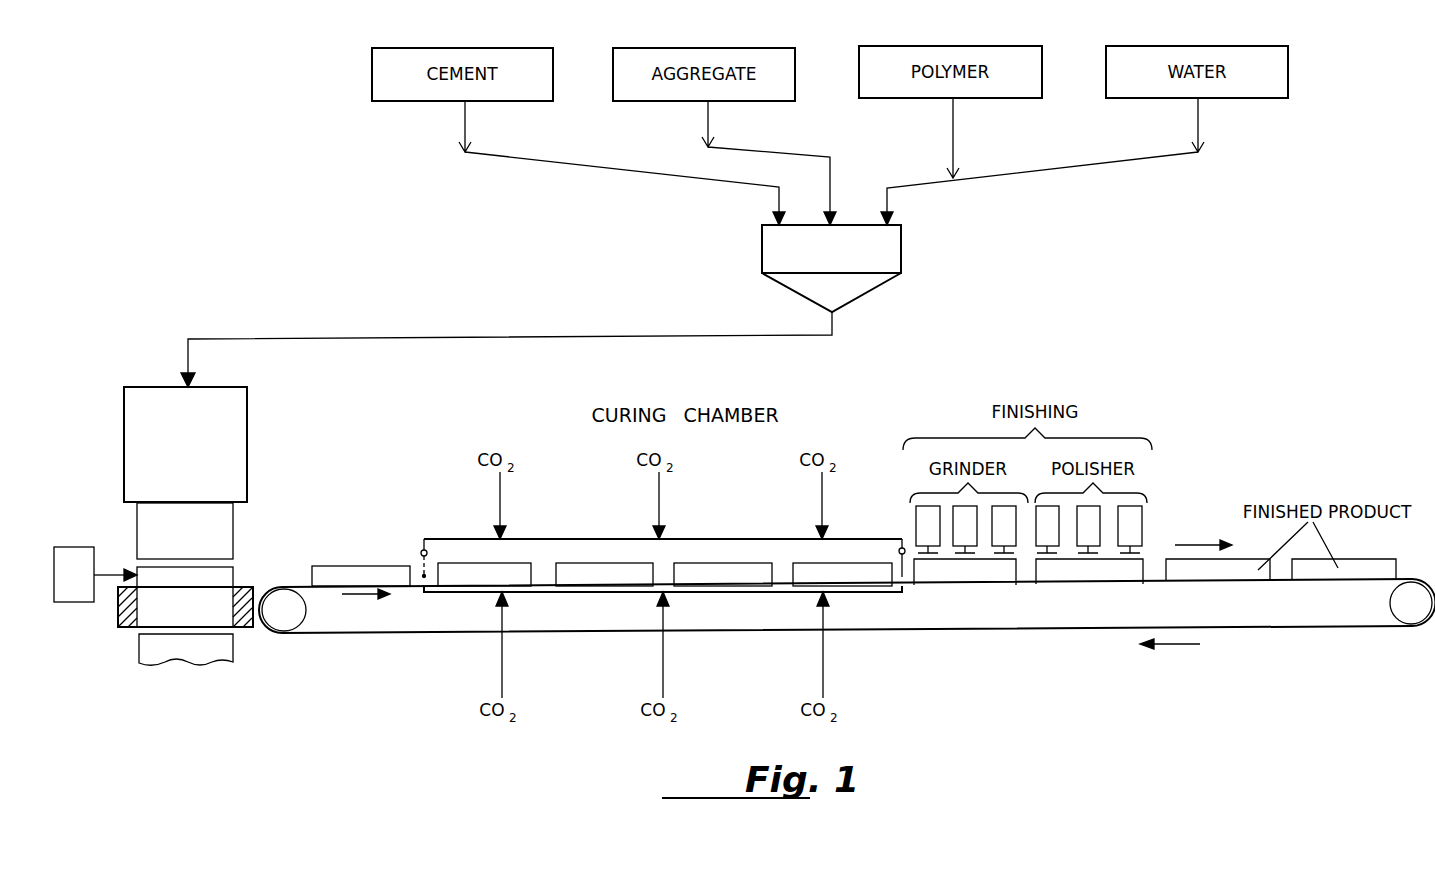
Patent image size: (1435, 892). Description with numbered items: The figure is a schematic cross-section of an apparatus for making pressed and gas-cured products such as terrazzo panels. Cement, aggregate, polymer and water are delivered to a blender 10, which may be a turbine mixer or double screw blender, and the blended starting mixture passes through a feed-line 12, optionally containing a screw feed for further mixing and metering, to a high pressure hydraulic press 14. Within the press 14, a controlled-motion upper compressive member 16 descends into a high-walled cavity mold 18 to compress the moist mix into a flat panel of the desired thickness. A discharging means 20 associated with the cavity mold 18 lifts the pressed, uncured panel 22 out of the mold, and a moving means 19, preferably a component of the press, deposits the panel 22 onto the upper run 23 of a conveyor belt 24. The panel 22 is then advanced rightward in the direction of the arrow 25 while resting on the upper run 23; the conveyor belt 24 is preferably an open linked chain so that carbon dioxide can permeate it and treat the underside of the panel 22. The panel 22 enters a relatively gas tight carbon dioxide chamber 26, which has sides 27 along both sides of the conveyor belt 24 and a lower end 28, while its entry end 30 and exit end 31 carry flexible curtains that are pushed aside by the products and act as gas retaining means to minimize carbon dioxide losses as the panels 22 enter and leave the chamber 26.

The blender 10 is at (892, 251).
The feed-line 12 is at (512, 338).
The press 14 is at (258, 441).
The upper compressive member 16 is at (217, 532).
The cavity mold 18 is at (123, 616).
The moving means 19 is at (77, 553).
The discharging means 20 is at (175, 652).
The uncured panel 22 is at (222, 580).
The upper run 23 is at (297, 586).
The conveyor belt 24 is at (847, 605).
The arrow 25 is at (364, 602).
The carbon dioxide chamber 26 is at (663, 515).
The sides 27 is at (592, 548).
The lower end 28 is at (585, 595).
The entry end 30 is at (427, 573).
The exit end 31 is at (897, 560).